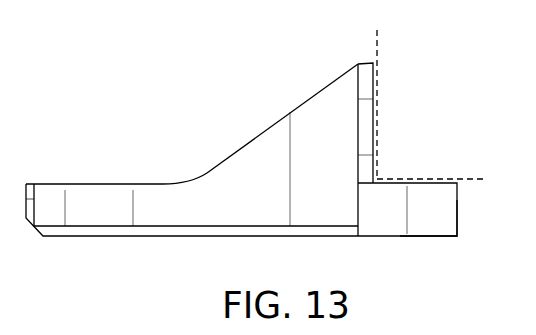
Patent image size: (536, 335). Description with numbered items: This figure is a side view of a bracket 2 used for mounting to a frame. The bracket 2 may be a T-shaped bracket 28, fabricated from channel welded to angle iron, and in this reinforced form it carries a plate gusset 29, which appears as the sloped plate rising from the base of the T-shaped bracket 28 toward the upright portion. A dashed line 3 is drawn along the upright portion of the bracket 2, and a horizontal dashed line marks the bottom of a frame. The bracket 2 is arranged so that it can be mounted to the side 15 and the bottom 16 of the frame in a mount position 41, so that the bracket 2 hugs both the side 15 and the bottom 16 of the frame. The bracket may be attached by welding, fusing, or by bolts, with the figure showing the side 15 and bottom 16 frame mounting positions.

The bracket 2 is at (387, 203).
The axis 3 is at (377, 50).
The side 15 is at (376, 127).
The bottom 16 is at (433, 179).
The T-shaped bracket 28 is at (175, 210).
The plate gusset 29 is at (308, 122).
The mount position 41 is at (437, 218).